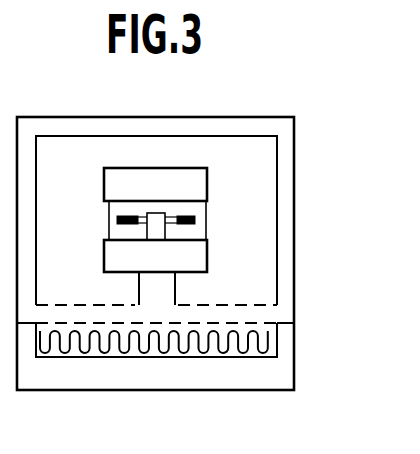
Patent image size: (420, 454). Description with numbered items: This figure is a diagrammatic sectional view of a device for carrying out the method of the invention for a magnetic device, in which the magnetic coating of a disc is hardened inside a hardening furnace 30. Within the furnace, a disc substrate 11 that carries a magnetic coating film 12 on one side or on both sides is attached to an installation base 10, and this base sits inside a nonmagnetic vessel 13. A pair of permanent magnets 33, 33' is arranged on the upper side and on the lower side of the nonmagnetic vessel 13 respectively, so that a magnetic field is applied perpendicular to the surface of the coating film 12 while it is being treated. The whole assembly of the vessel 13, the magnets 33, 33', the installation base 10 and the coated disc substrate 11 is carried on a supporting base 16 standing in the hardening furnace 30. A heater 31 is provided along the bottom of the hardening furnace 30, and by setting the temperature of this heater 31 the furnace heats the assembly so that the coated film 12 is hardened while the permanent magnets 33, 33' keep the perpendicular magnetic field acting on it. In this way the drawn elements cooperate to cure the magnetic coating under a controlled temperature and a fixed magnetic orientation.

The installation base 10 is at (160, 230).
The disc substrate 11 is at (173, 213).
The magnetic coating film 12 is at (195, 214).
The nonmagnetic vessel 13 is at (109, 221).
The supporting base 16 is at (148, 290).
The hardening furnace 30 is at (294, 286).
The heater 31 is at (258, 332).
The permanent magnet 33 is at (129, 184).
The permanent magnet 33' is at (129, 255).